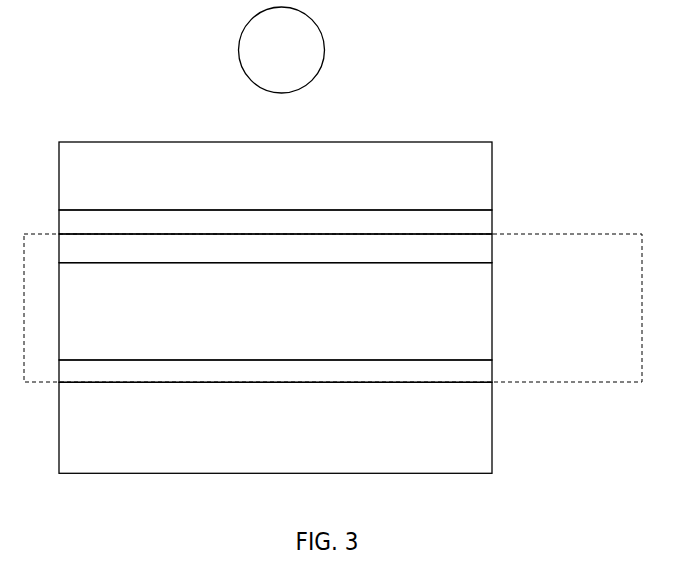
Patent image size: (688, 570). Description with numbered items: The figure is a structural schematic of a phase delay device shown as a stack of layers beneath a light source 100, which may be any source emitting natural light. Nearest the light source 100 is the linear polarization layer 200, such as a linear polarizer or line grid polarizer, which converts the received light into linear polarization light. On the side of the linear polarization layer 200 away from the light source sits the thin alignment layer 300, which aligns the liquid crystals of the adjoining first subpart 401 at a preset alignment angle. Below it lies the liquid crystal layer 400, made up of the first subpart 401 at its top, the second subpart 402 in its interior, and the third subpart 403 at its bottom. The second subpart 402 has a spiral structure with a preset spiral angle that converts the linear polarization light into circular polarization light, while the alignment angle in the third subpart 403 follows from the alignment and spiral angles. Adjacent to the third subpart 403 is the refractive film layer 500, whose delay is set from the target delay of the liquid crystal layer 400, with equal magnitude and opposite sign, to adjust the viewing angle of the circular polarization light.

The light source 100 is at (282, 50).
The linear polarization layer 200 is at (275, 176).
The alignment layer 300 is at (464, 223).
The liquid crystal layer 400 is at (333, 308).
The first subpart 401 is at (275, 248).
The second subpart 402 is at (275, 311).
The third subpart 403 is at (275, 371).
The refractive film layer 500 is at (275, 427).